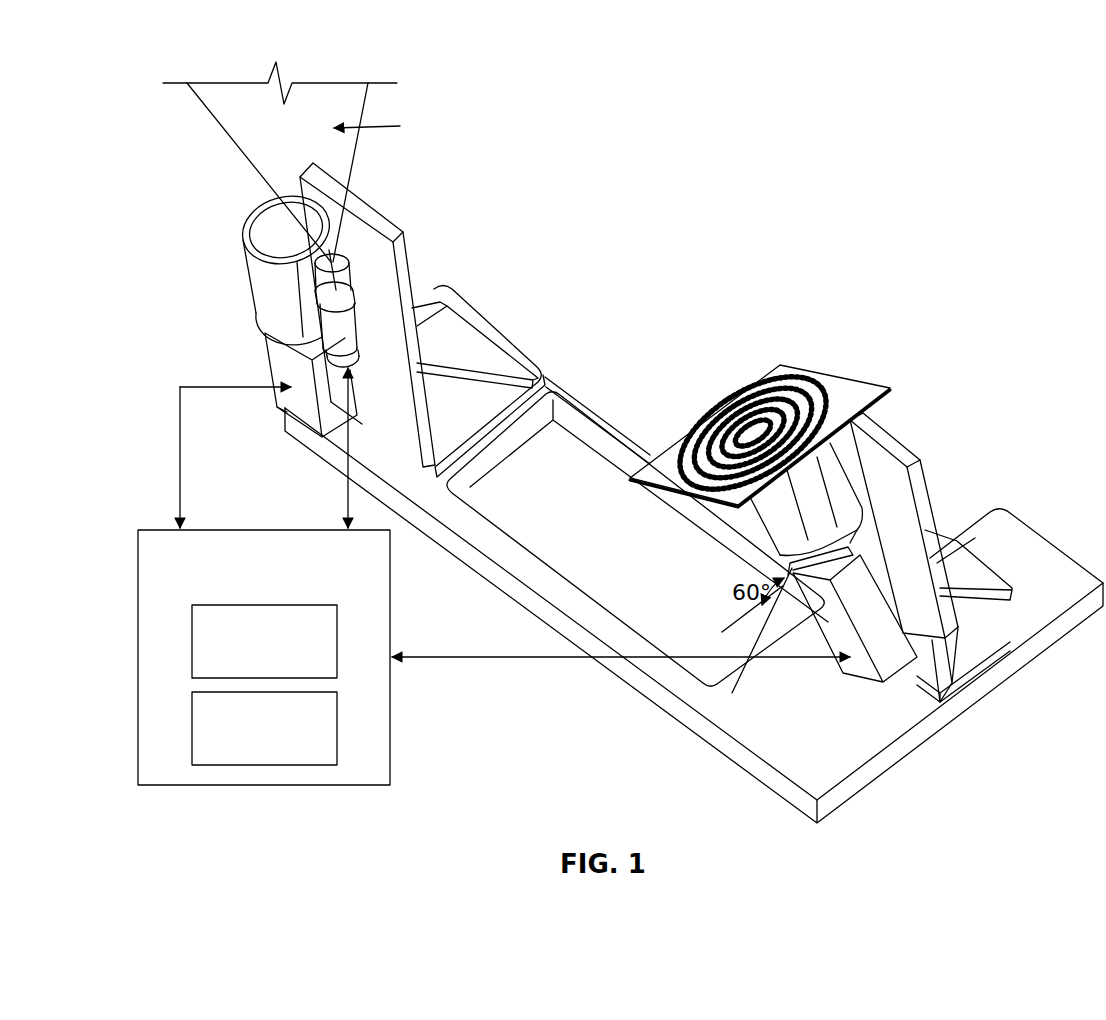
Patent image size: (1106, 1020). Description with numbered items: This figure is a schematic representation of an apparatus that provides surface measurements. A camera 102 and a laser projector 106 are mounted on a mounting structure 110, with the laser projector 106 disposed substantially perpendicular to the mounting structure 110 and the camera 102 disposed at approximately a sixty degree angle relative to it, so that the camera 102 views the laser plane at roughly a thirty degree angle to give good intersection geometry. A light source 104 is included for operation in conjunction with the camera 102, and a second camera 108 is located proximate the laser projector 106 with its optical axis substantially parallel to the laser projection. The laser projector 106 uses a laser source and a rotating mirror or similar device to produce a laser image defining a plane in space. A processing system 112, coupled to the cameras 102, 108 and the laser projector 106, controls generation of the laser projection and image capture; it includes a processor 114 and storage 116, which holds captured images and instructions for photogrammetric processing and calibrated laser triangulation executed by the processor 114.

The camera 102 is at (830, 478).
The light source 104 is at (795, 380).
The laser projector 106 is at (336, 258).
The second camera 108 is at (268, 294).
The mounting structure 110 is at (565, 385).
The processing system 112 is at (175, 530).
The processor 114 is at (248, 605).
The storage 116 is at (192, 728).